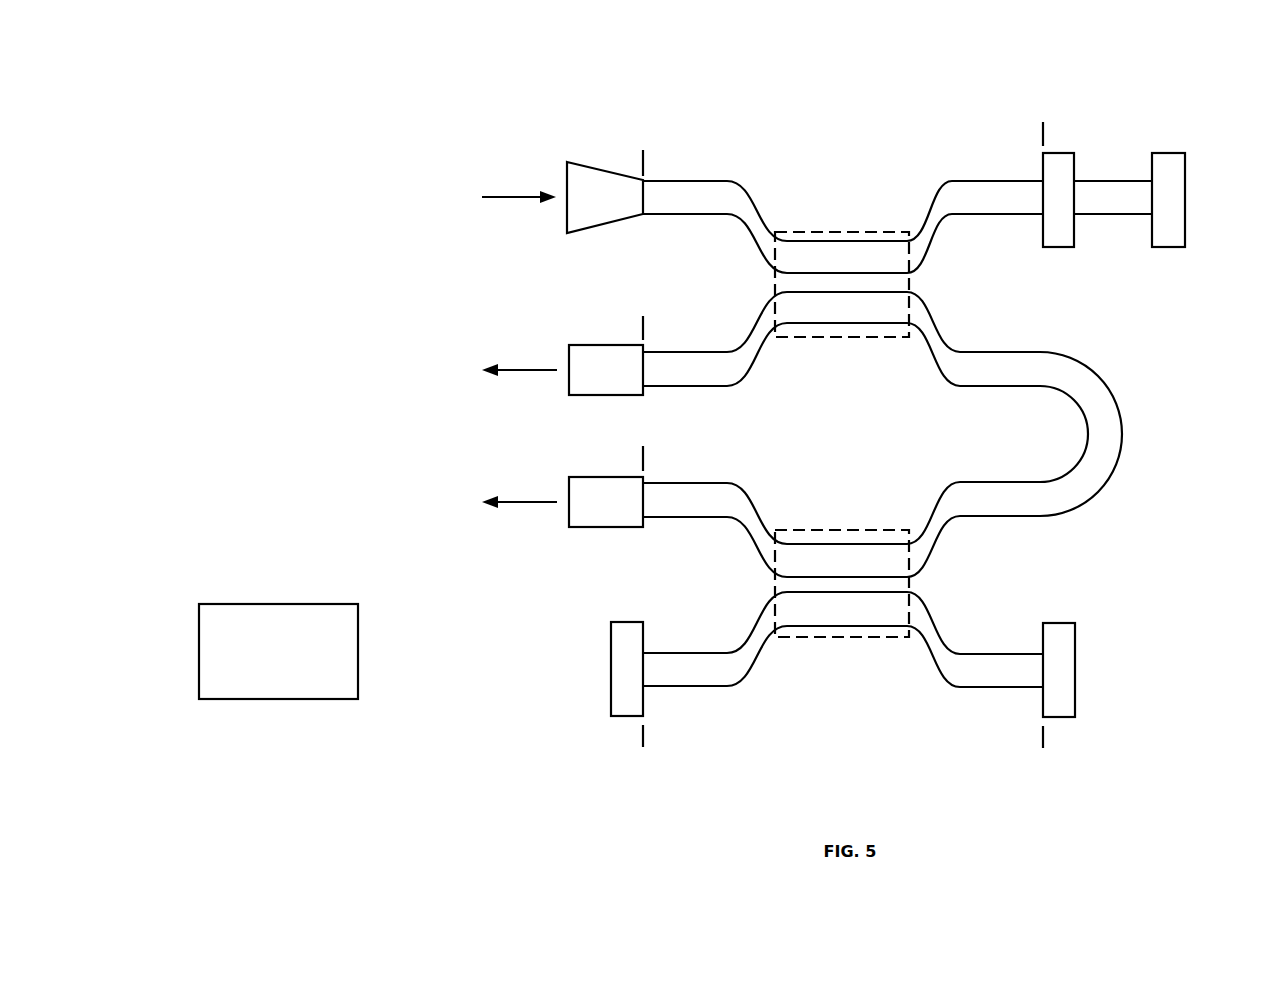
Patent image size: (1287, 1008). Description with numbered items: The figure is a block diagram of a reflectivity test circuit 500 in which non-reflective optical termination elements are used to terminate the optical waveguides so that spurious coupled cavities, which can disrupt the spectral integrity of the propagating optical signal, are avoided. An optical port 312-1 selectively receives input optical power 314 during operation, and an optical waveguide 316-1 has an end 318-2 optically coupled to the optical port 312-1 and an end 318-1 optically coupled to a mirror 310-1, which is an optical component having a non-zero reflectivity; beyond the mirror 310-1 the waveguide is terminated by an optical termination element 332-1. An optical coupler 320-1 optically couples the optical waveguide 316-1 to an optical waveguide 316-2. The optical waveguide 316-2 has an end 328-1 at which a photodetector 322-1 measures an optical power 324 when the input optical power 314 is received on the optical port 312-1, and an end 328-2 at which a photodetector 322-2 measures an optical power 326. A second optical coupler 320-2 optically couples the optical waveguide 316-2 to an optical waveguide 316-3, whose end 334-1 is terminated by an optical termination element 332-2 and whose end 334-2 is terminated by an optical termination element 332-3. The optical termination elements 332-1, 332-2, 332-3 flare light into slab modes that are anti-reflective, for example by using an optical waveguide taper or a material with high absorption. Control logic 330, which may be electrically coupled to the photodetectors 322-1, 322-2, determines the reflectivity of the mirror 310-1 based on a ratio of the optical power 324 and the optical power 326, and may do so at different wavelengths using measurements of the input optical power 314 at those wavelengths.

The reflectivity test circuit 500 is at (331, 117).
The input optical power 314 is at (513, 193).
The optical port 312-1 is at (610, 197).
The end 318-2 is at (643, 140).
The optical waveguide 316-1 is at (740, 203).
The end 318-1 is at (1042, 112).
The mirror 310-1 is at (1065, 170).
The optical termination element 332-1 is at (1172, 193).
The photodetector 322-1 is at (598, 358).
The end 328-1 is at (643, 306).
The optical power 324 is at (515, 367).
The optical coupler 320-1 is at (908, 283).
The optical waveguide 316-2 is at (1032, 373).
The optical power 326 is at (515, 498).
The end 328-2 is at (643, 439).
The photodetector 322-2 is at (598, 510).
The optical coupler 320-2 is at (908, 585).
The optical termination element 332-2 is at (1062, 665).
The optical waveguide 316-3 is at (738, 665).
The optical termination element 332-3 is at (632, 666).
The end 334-2 is at (643, 759).
The end 334-1 is at (1043, 760).
The control logic 330 is at (278, 651).